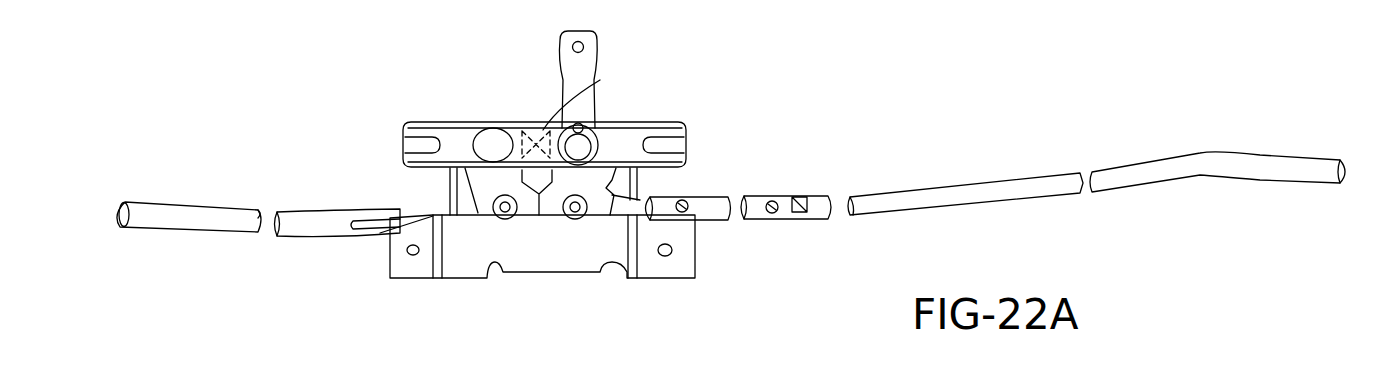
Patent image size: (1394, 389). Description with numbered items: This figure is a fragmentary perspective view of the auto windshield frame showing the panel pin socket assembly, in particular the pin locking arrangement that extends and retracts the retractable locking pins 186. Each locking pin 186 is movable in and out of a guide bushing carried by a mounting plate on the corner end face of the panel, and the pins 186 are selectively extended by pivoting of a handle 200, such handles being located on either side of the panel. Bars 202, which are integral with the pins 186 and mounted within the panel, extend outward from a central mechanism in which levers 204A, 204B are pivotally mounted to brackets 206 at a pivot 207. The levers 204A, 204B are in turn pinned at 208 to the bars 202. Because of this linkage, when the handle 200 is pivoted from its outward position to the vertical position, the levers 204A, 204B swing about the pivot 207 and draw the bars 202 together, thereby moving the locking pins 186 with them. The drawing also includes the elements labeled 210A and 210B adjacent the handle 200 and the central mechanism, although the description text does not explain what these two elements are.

The tube 186 is at (113, 220).
The lever 200 is at (594, 38).
The tube section 202 is at (221, 232).
The right arm 204A is at (585, 182).
The left arm 204B is at (488, 188).
The housing 206 is at (430, 120).
The pivot hole 207 is at (489, 137).
The bolt 208 is at (505, 208).
The spring arm 210A is at (605, 77).
The spring arm 210B is at (508, 120).